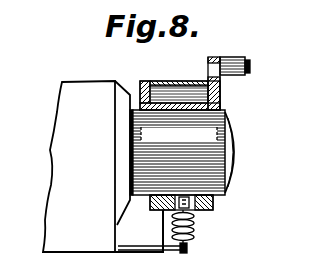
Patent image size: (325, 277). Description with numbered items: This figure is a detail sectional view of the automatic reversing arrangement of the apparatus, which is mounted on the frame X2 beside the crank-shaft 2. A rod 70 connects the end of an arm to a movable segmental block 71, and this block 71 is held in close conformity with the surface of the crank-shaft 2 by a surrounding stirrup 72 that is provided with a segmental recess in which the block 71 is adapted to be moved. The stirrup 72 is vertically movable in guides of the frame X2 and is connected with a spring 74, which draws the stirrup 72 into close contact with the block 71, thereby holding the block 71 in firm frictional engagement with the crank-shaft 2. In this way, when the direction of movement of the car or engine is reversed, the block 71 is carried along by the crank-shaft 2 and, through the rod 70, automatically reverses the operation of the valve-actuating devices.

The frame X2 is at (114, 166).
The crank-shaft 2 is at (230, 140).
The segmental block 71 is at (172, 95).
The rod 70 is at (233, 78).
The stirrup 72 is at (217, 205).
The spring 74 is at (190, 234).